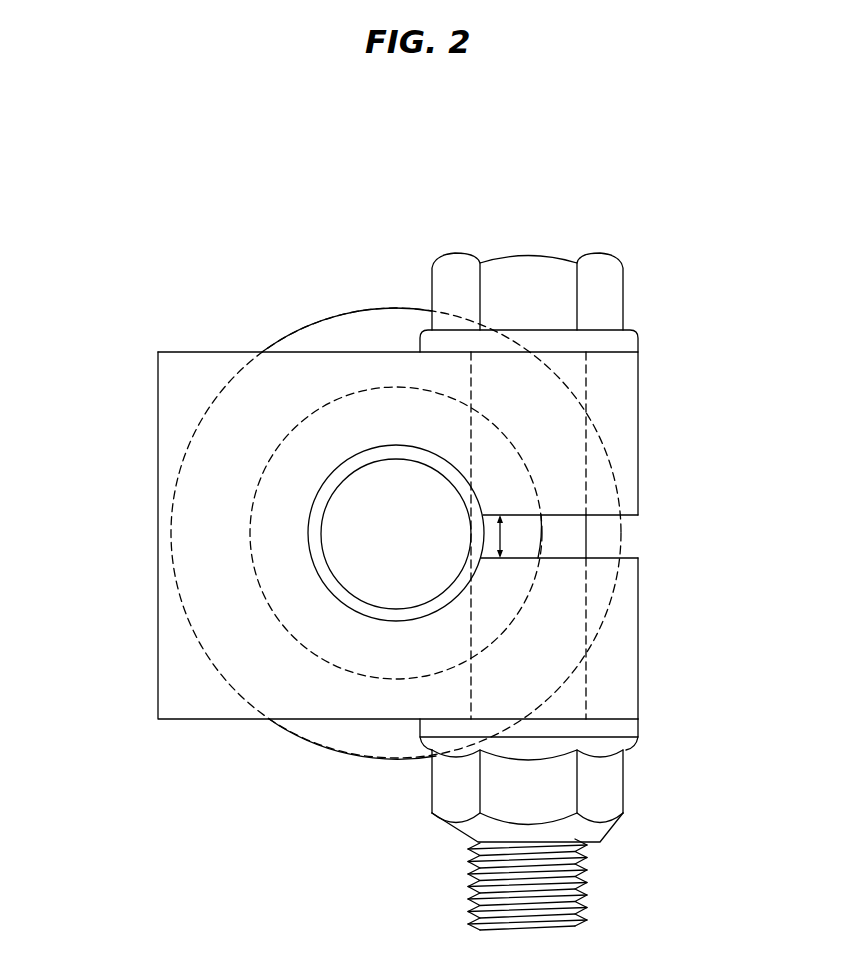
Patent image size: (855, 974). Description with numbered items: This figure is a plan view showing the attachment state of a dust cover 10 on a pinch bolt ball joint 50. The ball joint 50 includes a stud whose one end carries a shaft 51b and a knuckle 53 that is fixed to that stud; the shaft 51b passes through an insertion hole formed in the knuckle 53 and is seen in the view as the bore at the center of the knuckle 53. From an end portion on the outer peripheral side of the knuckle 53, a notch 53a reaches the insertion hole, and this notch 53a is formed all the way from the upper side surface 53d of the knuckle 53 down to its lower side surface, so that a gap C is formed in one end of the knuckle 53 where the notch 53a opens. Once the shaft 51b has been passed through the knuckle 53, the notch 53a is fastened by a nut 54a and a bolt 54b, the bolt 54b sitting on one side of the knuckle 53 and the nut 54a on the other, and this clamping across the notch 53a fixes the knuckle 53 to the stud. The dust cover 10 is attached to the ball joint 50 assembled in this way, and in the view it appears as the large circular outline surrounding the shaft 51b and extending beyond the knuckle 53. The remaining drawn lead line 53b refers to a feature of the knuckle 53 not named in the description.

The dust cover 10 is at (377, 302).
The pinch bolt ball joint 50 is at (410, 566).
The shaft 51b is at (388, 578).
The knuckle 53 is at (440, 602).
The notch 53a is at (600, 538).
The bolt hole 53b is at (567, 516).
The upper side surface 53d is at (197, 692).
The nut 54a is at (605, 800).
The bolt 54b is at (598, 295).
The gap C is at (509, 536).